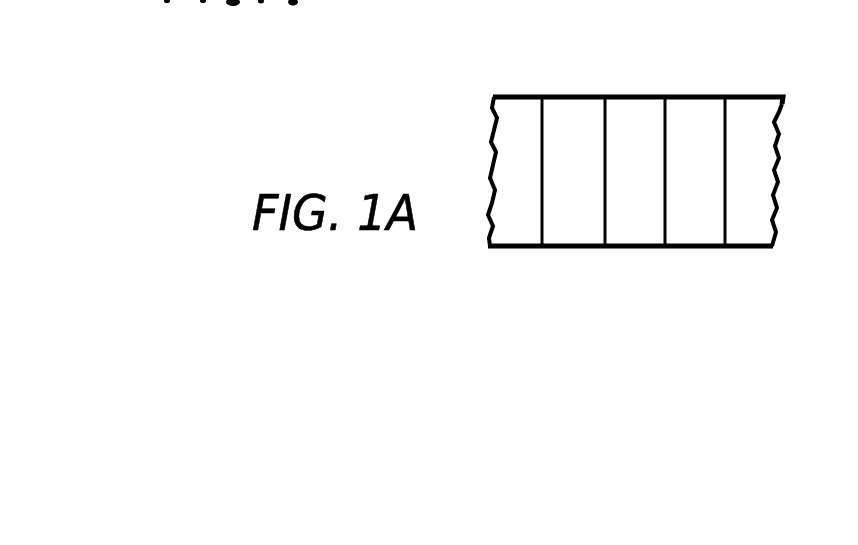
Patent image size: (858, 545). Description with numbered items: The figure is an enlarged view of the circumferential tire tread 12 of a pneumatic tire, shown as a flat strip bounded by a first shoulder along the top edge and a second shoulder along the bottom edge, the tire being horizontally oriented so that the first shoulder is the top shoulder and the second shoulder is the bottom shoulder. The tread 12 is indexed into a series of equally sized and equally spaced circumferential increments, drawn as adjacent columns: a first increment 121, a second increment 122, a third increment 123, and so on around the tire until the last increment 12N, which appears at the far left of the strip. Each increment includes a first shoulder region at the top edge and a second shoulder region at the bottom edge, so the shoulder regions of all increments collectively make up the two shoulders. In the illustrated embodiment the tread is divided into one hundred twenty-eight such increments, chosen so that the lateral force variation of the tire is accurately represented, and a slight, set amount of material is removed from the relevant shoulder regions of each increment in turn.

The circumferential tire tread 12 is at (518, 114).
The Nth circumferential increment 12N is at (527, 138).
The first circumferential increment 121 is at (580, 165).
The second circumferential increment 122 is at (650, 181).
The third circumferential increment 123 is at (690, 228).